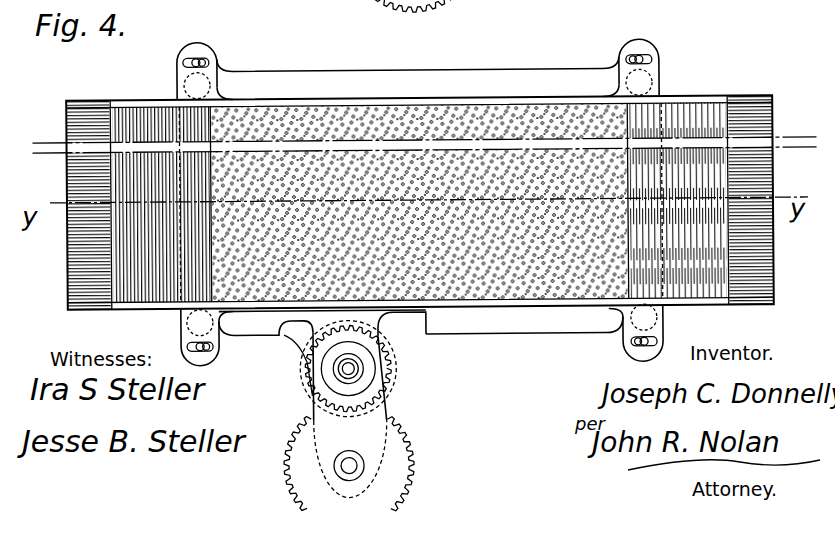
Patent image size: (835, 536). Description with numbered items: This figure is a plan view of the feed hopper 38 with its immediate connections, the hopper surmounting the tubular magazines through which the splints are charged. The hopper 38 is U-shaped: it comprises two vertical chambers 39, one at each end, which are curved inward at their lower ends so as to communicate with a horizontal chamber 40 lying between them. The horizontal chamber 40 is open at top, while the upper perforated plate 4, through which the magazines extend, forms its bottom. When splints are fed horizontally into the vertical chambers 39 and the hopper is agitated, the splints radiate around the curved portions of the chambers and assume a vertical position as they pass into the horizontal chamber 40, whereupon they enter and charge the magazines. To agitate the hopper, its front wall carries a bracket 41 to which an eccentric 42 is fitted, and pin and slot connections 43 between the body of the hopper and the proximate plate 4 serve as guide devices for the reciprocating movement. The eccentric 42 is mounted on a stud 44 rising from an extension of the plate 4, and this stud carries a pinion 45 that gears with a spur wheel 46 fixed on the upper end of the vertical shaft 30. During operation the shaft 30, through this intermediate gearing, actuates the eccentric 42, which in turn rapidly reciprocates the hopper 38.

The perforated plate 4 is at (510, 330).
The vertical shaft 30 is at (349, 466).
The feed hopper 38 is at (403, 101).
The vertical chambers 39 is at (67, 126).
The horizontal chamber 40 is at (298, 108).
The bracket 41 is at (425, 314).
The eccentric 42 is at (333, 358).
The pin and slot connections 43 is at (177, 60).
The stud 44 is at (343, 377).
The pinion 45 is at (381, 372).
The spur wheel 46 is at (403, 463).